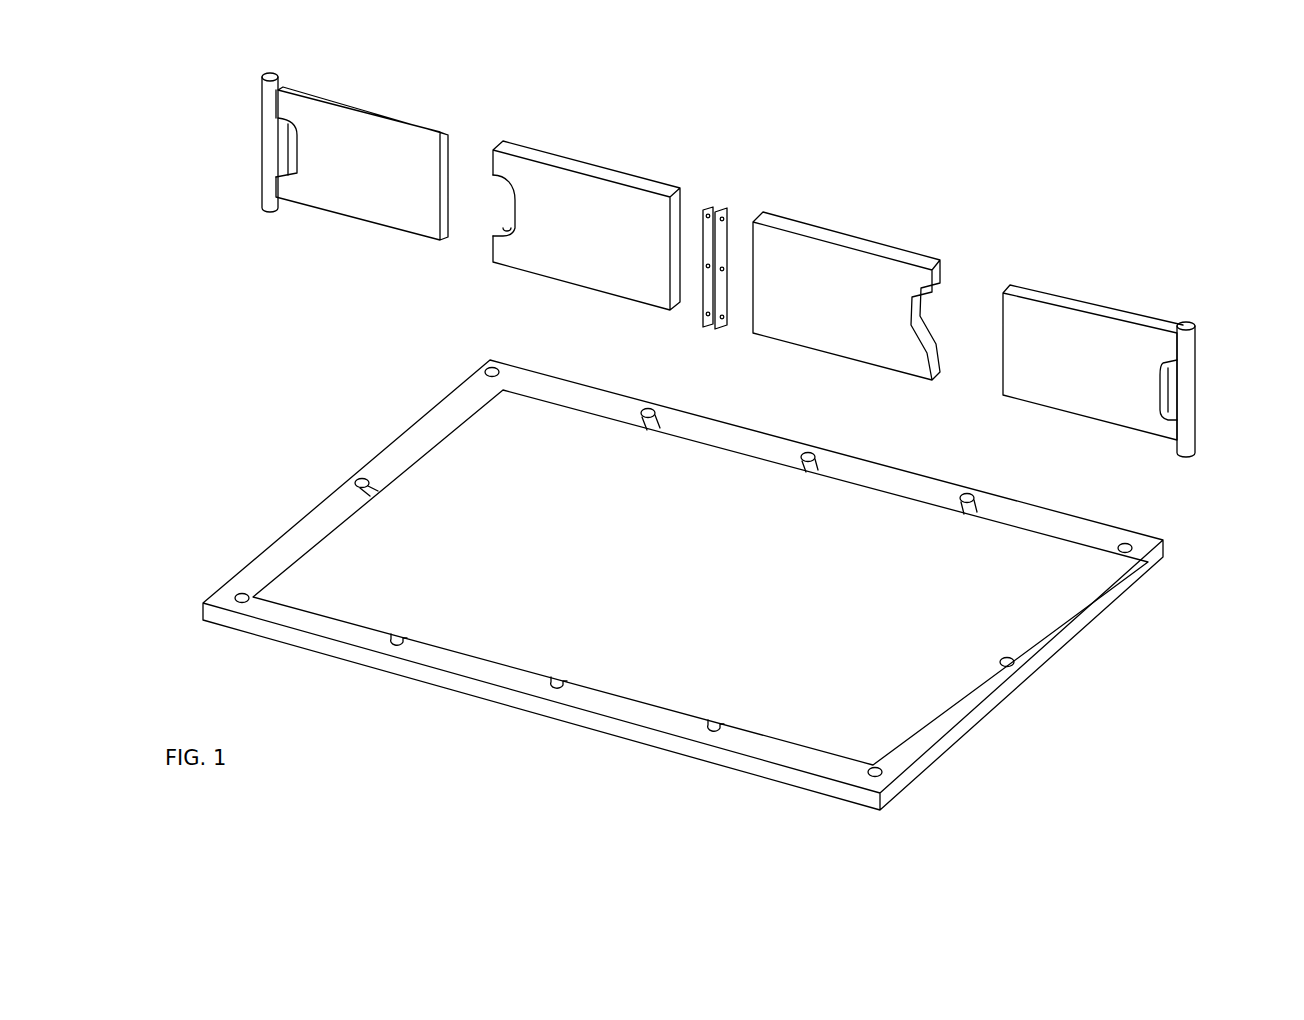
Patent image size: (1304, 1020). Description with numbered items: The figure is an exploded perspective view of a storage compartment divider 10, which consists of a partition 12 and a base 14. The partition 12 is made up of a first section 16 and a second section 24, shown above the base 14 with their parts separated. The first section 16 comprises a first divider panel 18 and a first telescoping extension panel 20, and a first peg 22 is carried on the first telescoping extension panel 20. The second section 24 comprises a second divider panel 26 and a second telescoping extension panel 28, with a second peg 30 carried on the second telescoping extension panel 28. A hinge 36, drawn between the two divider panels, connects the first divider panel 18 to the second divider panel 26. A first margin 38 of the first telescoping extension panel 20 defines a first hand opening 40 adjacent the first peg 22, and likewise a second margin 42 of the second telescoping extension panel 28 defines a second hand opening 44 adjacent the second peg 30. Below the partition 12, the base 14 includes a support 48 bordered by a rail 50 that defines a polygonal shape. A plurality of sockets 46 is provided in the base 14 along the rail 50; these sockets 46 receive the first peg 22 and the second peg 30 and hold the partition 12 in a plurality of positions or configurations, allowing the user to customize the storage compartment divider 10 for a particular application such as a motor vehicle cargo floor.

The storage compartment divider 10 is at (1000, 146).
The partition 12 is at (275, 242).
The base 14 is at (362, 430).
The first section 16 is at (555, 123).
The first divider panel 18 is at (588, 195).
The first telescoping extension panel 20 is at (359, 122).
The first peg 22 is at (262, 142).
The second section 24 is at (1042, 258).
The second divider panel 26 is at (848, 245).
The second telescoping extension panel 28 is at (1082, 308).
The second peg 30 is at (1195, 382).
The hinge 36 is at (717, 215).
The first margin 38 is at (287, 107).
The first hand opening 40 is at (288, 157).
The second margin 42 is at (1160, 345).
The second hand opening 44 is at (1172, 395).
The sockets 46 is at (493, 370).
The support 48 is at (708, 582).
The rail 50 is at (293, 540).